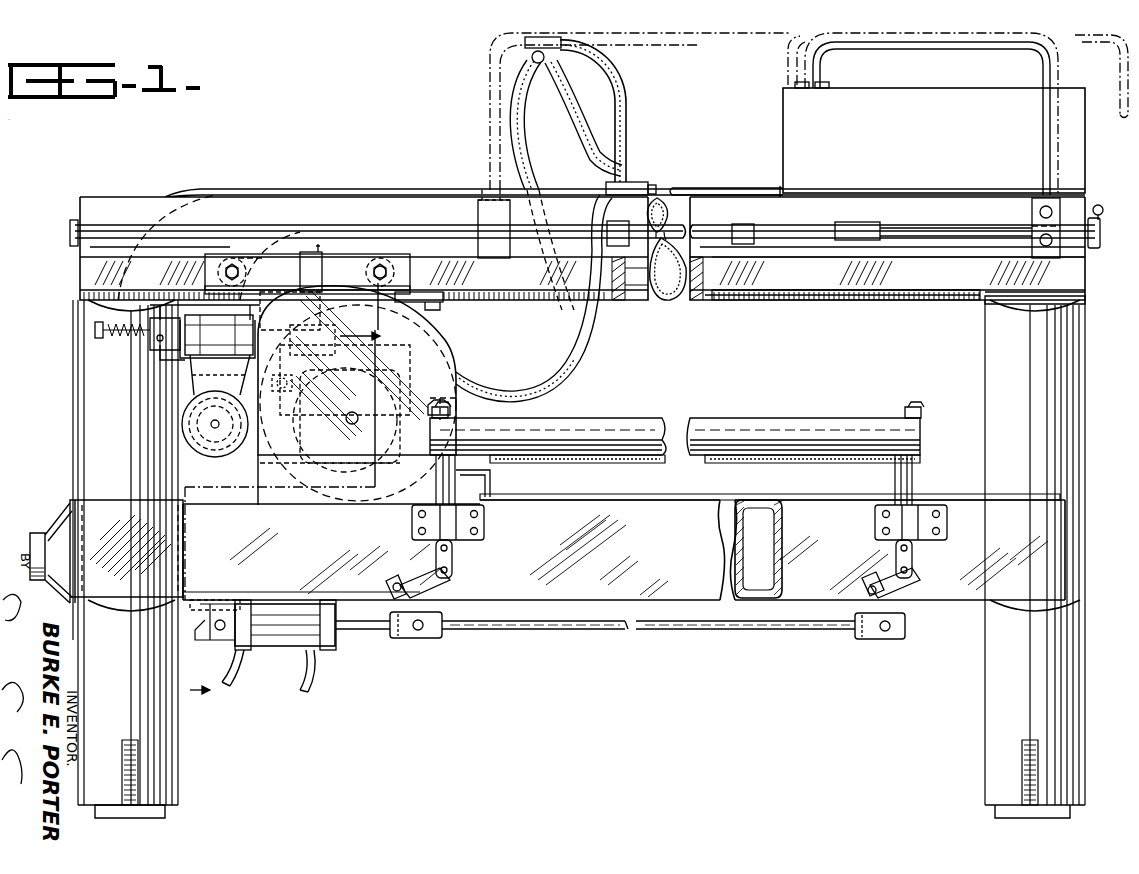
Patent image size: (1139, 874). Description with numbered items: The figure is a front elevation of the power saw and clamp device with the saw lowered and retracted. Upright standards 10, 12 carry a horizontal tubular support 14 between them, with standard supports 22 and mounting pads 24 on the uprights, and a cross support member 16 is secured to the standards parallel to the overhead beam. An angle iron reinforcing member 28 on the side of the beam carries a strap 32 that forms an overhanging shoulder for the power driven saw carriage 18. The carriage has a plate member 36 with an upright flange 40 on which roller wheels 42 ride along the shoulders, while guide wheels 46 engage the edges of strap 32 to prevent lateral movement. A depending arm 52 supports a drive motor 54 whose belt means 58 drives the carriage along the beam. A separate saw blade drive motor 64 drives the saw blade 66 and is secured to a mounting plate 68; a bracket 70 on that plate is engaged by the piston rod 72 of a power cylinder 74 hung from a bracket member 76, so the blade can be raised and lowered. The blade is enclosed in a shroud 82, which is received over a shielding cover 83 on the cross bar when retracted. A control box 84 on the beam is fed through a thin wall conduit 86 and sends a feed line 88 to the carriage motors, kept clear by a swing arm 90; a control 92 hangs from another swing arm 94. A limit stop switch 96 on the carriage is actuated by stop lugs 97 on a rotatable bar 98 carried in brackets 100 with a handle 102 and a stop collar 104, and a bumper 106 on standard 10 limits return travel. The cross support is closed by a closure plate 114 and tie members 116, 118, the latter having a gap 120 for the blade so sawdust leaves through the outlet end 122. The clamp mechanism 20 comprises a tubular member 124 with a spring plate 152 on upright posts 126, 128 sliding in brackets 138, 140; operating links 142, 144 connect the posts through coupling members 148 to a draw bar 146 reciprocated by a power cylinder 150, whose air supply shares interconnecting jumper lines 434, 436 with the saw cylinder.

The upright standard 10 is at (95, 407).
The upright standard 12 is at (995, 357).
The horizontal tubular support 14 is at (317, 207).
The cross support member 16 is at (645, 580).
The power driven saw carriage 18 is at (340, 250).
The clamp mechanism 20 is at (780, 412).
The standard support 22 is at (140, 778).
The mounting pad 24 is at (80, 296).
The angle iron reinforcing member 28 is at (795, 285).
The bar or strap iron stock 32 is at (863, 293).
The carriage plate member 36 is at (250, 300).
The upright flange 40 is at (260, 268).
The roller wheels 42 is at (230, 258).
The guide wheels 46 is at (440, 300).
The depending arm 52 is at (265, 435).
The drive motor 54 is at (215, 445).
The belt means 58 is at (238, 395).
The saw blade drive motor 64 is at (445, 400).
The saw blade 66 is at (400, 500).
The mounting plate 68 is at (366, 364).
The bracket 70 is at (320, 338).
The piston rod 72 is at (250, 338).
The power cylinder 74 is at (188, 352).
The bracket member 76 is at (152, 343).
The shroud 82 is at (445, 367).
The shielding cover 83 is at (272, 494).
The control box 84 is at (790, 128).
The thin wall conduit 86 is at (738, 190).
The feed line 88 is at (568, 113).
The swing arm 90 is at (630, 118).
The control 92 is at (1033, 212).
The swing arm 94 is at (1046, 118).
The limit stop switch 96 is at (312, 275).
The stop lugs 97 is at (615, 229).
The rotatable bar 98 is at (930, 230).
The brackets 100 is at (70, 232).
The handle 102 is at (1102, 210).
The stop collar 104 is at (858, 232).
The spring or pneumatic bumper 106 is at (100, 332).
The closure plate 114 is at (553, 602).
The tie member 116 is at (108, 500).
The tie member 118 is at (795, 498).
The gap 120 is at (750, 500).
The outlet end 122 is at (55, 540).
The tubular member 124 is at (590, 432).
The upright post 126 is at (444, 484).
The upright post 128 is at (908, 480).
The bracket 138 is at (470, 520).
The bracket 140 is at (878, 520).
The operating link 142 is at (452, 552).
The operating link 144 is at (434, 580).
The draw bar 146 is at (734, 636).
The coupling members 148 is at (432, 638).
The power cylinder 150 is at (268, 640).
The spring plate 152 is at (598, 456).
The interconnecting jumper line 434 is at (275, 682).
The interconnecting jumper line 436 is at (318, 688).